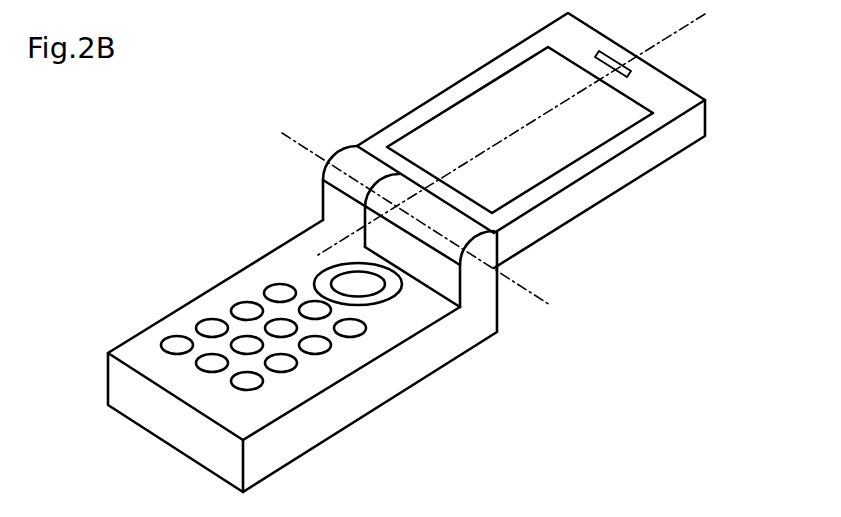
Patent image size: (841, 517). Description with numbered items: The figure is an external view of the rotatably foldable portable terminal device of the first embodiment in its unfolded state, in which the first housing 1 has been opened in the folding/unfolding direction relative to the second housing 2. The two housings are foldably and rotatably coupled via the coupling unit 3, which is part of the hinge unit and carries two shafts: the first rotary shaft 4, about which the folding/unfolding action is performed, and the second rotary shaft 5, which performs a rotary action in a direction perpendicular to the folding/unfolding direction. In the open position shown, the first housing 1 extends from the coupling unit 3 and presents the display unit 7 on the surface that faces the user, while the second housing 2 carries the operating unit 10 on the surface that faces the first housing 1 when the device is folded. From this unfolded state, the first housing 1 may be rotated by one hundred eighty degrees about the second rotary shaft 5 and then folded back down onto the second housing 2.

The first housing 1 is at (665, 145).
The second housing 2 is at (152, 323).
The coupling unit 3 is at (478, 236).
The first rotary shaft 4 is at (325, 162).
The second rotary shaft 5 is at (661, 63).
The display unit 7 is at (437, 140).
The operating unit 10 is at (281, 364).